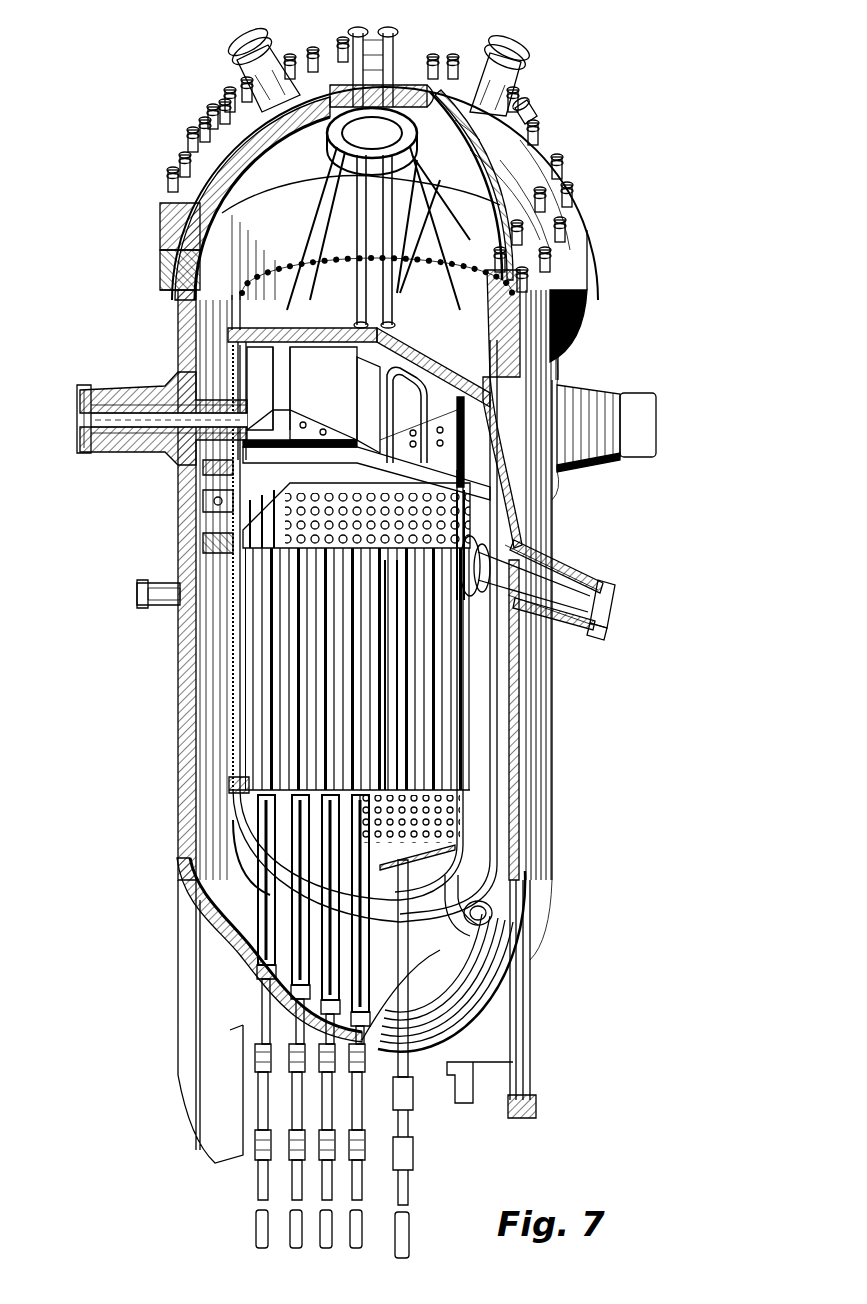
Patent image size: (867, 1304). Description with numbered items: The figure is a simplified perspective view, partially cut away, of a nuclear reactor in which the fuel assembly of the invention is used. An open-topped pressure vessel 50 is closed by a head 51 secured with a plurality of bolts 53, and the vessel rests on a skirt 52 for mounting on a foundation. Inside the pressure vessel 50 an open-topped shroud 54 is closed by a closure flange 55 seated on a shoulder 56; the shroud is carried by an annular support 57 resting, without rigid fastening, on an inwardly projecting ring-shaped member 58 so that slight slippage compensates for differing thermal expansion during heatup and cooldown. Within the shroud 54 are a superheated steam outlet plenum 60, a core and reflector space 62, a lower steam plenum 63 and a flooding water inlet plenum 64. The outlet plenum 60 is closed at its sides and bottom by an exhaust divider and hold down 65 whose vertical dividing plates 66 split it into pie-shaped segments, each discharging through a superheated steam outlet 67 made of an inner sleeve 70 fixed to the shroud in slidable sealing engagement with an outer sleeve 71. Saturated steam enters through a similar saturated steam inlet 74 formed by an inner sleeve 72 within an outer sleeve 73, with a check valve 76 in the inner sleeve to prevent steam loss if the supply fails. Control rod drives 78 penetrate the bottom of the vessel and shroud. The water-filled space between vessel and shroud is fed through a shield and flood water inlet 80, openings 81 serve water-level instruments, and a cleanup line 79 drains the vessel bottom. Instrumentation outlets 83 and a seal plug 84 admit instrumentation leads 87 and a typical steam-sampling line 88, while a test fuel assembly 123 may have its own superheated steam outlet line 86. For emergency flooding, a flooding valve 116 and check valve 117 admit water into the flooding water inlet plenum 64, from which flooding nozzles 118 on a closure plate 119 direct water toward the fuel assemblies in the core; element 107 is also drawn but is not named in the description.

The pressure vessel 50 is at (550, 717).
The head 51 is at (587, 213).
The skirt 52 is at (527, 993).
The bolts 53 is at (577, 177).
The shroud 54 is at (497, 773).
The closure flange 55 is at (227, 330).
The shoulder 56 is at (227, 350).
The annular support 57 is at (182, 507).
The ring-shaped member 58 is at (180, 542).
The superheated steam outlet plenum 60 is at (327, 398).
The core and reflector space 62 is at (233, 687).
The lower steam plenum 63 is at (240, 803).
The flooding water inlet plenum 64 is at (390, 870).
The exhaust divider and hold down 65 is at (240, 377).
The vertical dividing plates 66 is at (353, 437).
The superheated steam outlet 67 is at (593, 393).
The inner sleeve 70 is at (80, 403).
The outer sleeve 71 is at (80, 437).
The inner sleeve 72 is at (583, 570).
The outer sleeve 73 is at (603, 613).
The saturated steam inlet 74 is at (610, 582).
The check valve 76 is at (500, 580).
The control rod drives 78 is at (407, 1192).
The cleanup line 79 is at (473, 1080).
The shield and flood water inlet 80 is at (217, 467).
The openings 81 is at (140, 583).
The instrumentation outlets 83 is at (260, 77).
The seal plug 84 is at (403, 50).
The superheated steam outlet line 86 is at (383, 642).
The instrumentation leads 87 is at (317, 193).
The steam-sampling line 88 is at (292, 364).
The instrument rod 107 is at (413, 1093).
The flooding valve 116 is at (492, 912).
The check valve 117 is at (480, 895).
The flooding nozzles 118 is at (283, 817).
The closure plate 119 is at (237, 855).
The test fuel assembly 123 is at (385, 580).